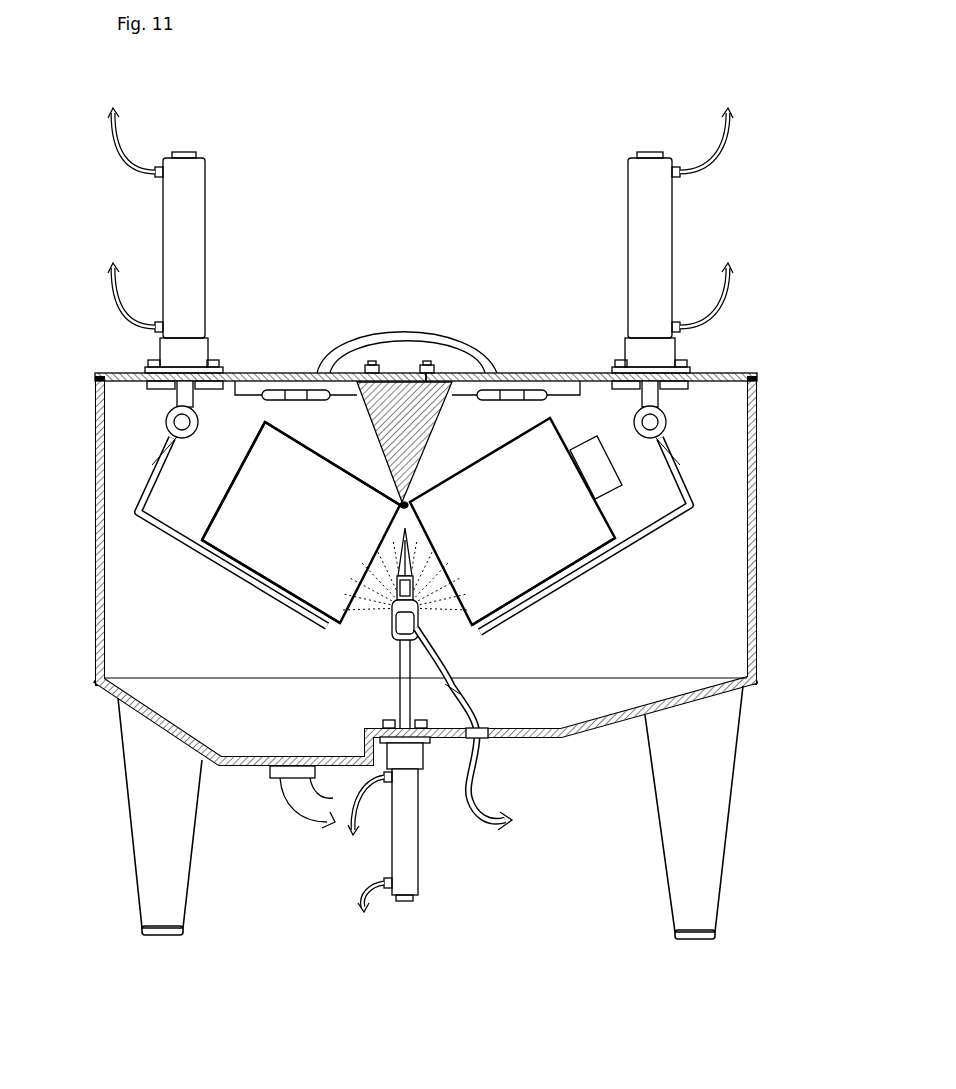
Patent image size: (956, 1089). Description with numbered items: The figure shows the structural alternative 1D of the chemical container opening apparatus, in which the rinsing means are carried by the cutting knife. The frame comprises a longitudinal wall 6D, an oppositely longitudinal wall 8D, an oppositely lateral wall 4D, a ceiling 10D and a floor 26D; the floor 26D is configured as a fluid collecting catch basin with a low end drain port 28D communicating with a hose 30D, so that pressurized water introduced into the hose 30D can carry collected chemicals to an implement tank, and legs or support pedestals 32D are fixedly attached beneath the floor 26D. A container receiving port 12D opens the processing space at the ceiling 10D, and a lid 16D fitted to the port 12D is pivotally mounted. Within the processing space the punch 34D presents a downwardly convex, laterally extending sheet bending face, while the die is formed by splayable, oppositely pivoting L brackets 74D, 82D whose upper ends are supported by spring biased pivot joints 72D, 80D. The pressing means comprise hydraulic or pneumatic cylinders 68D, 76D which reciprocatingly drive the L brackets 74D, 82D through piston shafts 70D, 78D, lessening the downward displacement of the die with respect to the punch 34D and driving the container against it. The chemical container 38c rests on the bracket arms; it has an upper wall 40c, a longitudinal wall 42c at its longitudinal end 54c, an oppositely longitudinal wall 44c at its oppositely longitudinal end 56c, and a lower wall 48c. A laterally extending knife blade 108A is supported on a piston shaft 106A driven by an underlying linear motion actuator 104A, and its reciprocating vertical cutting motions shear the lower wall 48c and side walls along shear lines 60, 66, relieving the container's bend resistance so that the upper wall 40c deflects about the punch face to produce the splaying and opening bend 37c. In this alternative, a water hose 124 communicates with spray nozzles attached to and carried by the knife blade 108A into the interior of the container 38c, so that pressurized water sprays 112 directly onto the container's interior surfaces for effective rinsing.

The structural alternative apparatus 1D is at (490, 293).
The oppositely lateral wall 4D is at (438, 617).
The longitudinal wall 6D is at (97, 560).
The oppositely longitudinal wall 8D is at (757, 523).
The ceiling 10D is at (456, 323).
The container receiving port 12D is at (598, 375).
The lid 16D is at (263, 375).
The floor 26D is at (590, 730).
The drain port 28D is at (288, 760).
The hose 30D is at (298, 803).
The support pedestal 32D is at (713, 785).
The punch 34D is at (441, 417).
The splaying and opening bend 37c is at (435, 470).
The chemical container 38c is at (534, 537).
The upper wall 40c is at (281, 524).
The longitudinal wall 42c is at (226, 497).
The oppositely longitudinal wall 44c is at (423, 520).
The lower wall 48c is at (320, 626).
The longitudinal end 54c is at (280, 518).
The oppositely longitudinal end 56c is at (590, 525).
The shear line 60 is at (285, 573).
The shear line 66 is at (537, 595).
The hydraulic or pneumatic cylinder 68D is at (198, 258).
The piston shaft 70D is at (183, 398).
The pivot joint 72D is at (177, 423).
The L bracket 74D is at (168, 537).
The pneumatic or hydraulic cylinder 76D is at (655, 262).
The piston shaft 78D is at (655, 393).
The pivot joint 80D is at (667, 420).
The L bracket 82D is at (650, 528).
The linear motion actuator 104A is at (403, 823).
The piston shaft 106A is at (398, 693).
The knife blade 108A is at (458, 600).
The spray pattern 112 is at (390, 610).
The water hose 124 is at (480, 820).